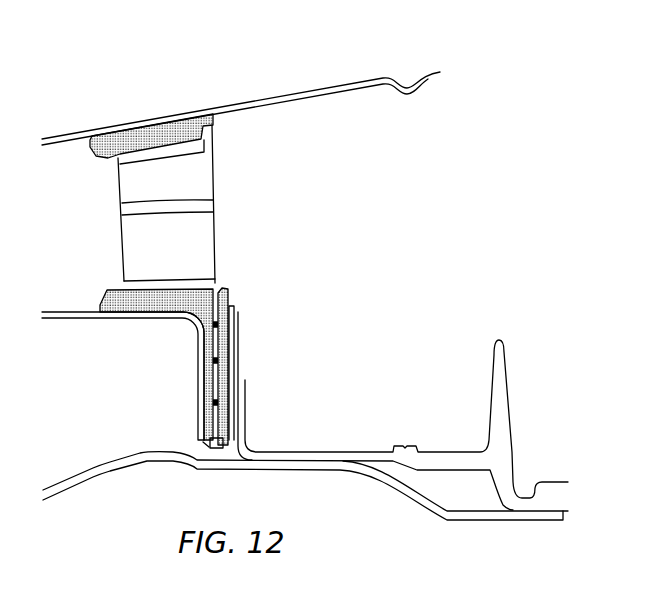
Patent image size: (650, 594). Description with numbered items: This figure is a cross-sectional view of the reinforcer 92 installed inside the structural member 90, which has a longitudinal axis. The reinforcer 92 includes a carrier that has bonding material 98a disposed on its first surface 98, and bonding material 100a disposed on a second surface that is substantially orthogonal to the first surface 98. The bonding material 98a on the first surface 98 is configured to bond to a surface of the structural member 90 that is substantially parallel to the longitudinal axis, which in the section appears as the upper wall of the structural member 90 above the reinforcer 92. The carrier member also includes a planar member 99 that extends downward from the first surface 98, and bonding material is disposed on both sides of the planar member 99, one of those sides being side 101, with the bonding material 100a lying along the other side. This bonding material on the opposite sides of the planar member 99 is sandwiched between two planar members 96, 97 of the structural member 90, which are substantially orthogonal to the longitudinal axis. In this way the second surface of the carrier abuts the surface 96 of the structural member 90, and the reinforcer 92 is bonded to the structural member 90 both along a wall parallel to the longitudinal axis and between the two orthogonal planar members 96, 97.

The structural member 90 is at (348, 86).
The bonding material 98a is at (118, 142).
The reinforcer 92 is at (152, 251).
The first surface 98 is at (128, 303).
The side of planar member 101 is at (221, 288).
The planar member of structural member 97 is at (196, 386).
The bonding material 100a is at (205, 430).
The planar member 99 is at (222, 345).
The surface of structural member 96 is at (243, 421).